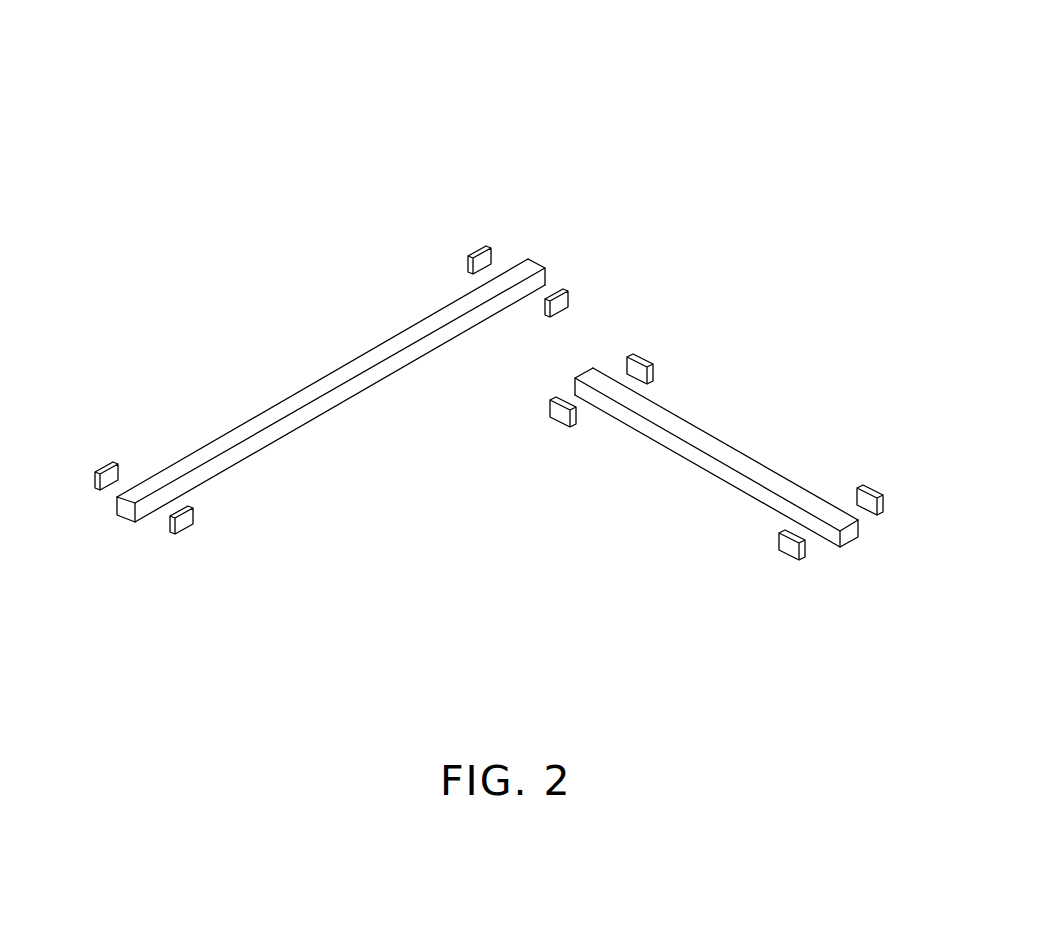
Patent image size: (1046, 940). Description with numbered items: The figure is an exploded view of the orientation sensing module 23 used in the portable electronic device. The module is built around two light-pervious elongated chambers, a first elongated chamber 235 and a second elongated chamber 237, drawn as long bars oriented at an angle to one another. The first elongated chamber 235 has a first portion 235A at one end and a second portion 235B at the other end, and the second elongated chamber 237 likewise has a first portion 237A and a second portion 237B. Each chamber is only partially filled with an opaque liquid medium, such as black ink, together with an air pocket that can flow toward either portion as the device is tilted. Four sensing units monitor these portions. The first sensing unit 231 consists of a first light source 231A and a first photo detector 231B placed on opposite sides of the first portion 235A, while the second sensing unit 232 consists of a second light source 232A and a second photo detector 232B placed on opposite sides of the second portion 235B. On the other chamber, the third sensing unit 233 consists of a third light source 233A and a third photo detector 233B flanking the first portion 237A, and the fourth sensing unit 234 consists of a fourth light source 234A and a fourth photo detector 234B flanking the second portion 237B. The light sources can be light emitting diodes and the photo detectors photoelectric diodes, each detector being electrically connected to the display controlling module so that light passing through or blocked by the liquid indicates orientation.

The orientation sensing module 23 is at (528, 69).
The first sensing unit 231 is at (613, 157).
The first light source 231A is at (481, 251).
The first photo detector 231B is at (562, 292).
The second sensing unit 232 is at (235, 377).
The second light source 232A is at (104, 466).
The second photo detector 232B is at (189, 512).
The third sensing unit 233 is at (664, 272).
The third light source 233A is at (557, 398).
The third photo detector 233B is at (641, 357).
The fourth sensing unit 234 is at (902, 398).
The fourth light source 234A is at (787, 533).
The fourth photo detector 234B is at (866, 489).
The first elongated chamber 235 is at (513, 433).
The first portion 235A is at (535, 285).
The second portion 235B is at (137, 523).
The second elongated chamber 237 is at (760, 643).
The first portion 237A is at (595, 398).
The second portion 237B is at (832, 537).